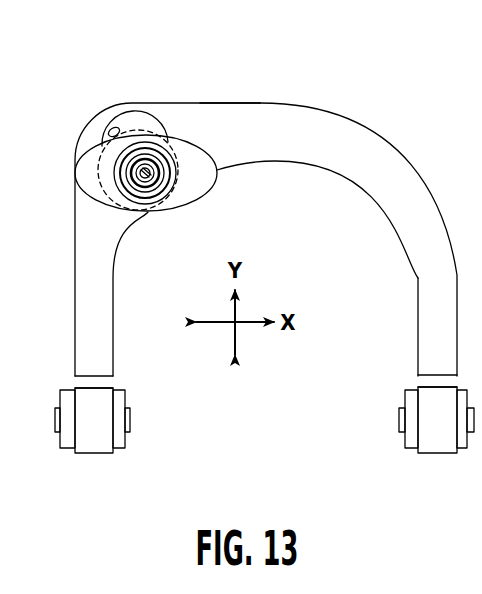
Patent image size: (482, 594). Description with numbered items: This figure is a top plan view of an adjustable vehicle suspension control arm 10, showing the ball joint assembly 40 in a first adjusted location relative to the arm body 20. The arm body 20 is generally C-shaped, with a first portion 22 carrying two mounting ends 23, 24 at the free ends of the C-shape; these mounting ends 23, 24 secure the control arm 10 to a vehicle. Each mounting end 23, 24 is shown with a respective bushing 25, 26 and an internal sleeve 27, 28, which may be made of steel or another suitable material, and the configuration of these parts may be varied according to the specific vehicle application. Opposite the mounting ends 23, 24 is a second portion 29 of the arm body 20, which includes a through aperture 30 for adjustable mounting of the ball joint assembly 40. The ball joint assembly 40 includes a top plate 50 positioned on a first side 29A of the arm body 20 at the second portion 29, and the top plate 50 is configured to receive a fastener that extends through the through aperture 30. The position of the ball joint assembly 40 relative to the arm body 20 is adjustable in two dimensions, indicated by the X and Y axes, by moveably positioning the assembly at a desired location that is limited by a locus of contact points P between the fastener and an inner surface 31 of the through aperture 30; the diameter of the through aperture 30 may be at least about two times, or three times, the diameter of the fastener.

The adjustable vehicle suspension control arm 10 is at (329, 66).
The arm body 20 is at (393, 146).
The first portion 22 is at (75, 453).
The mounting end 23 is at (428, 453).
The mounting end 24 is at (95, 453).
The bushing 25 is at (462, 453).
The bushing 26 is at (118, 445).
The internal sleeve 27 is at (398, 422).
The internal sleeve 28 is at (55, 408).
The second portion 29 is at (258, 102).
The first side 29A is at (335, 140).
The through aperture 30 is at (138, 121).
The inner surface 31 is at (119, 129).
The ball joint assembly 40 is at (153, 143).
The top plate 50 is at (197, 182).
The locus of contact points P is at (102, 170).